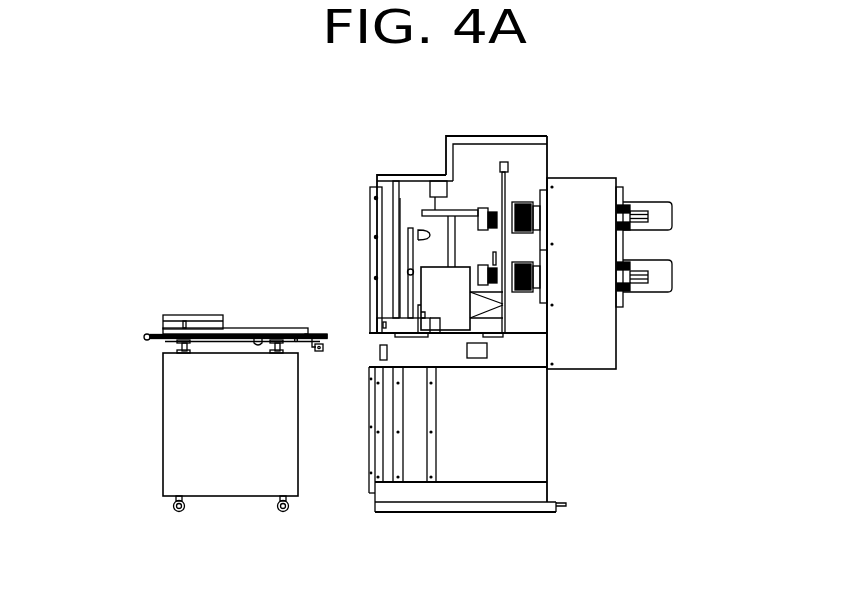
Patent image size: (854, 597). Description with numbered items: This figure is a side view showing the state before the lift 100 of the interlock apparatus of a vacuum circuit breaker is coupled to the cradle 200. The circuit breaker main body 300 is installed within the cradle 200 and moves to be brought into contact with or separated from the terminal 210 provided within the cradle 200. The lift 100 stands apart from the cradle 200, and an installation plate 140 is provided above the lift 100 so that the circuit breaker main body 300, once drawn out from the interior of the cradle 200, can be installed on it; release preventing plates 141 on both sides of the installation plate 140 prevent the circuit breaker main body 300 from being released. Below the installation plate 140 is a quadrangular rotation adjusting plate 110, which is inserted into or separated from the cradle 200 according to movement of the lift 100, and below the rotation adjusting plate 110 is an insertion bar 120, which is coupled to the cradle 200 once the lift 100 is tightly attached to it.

The lift 100 is at (124, 335).
The rotation adjusting plate 110 is at (324, 335).
The insertion bar 120 is at (320, 352).
The installation plate 140 is at (237, 330).
The release preventing plate 141 is at (200, 322).
The cradle 200 is at (527, 357).
The terminal 210 is at (668, 216).
The circuit breaker main body 300 is at (435, 282).